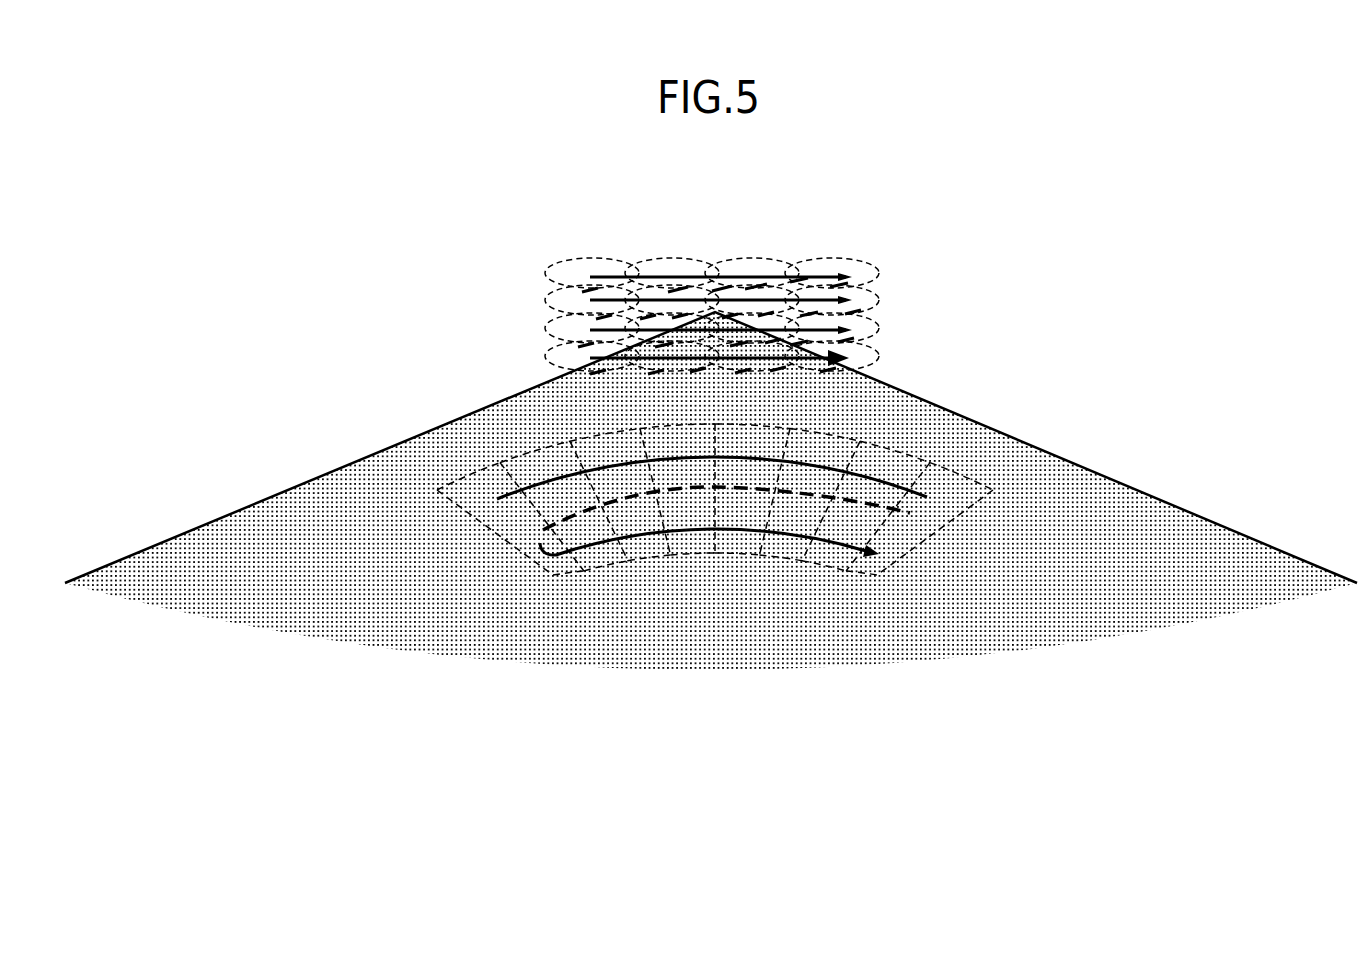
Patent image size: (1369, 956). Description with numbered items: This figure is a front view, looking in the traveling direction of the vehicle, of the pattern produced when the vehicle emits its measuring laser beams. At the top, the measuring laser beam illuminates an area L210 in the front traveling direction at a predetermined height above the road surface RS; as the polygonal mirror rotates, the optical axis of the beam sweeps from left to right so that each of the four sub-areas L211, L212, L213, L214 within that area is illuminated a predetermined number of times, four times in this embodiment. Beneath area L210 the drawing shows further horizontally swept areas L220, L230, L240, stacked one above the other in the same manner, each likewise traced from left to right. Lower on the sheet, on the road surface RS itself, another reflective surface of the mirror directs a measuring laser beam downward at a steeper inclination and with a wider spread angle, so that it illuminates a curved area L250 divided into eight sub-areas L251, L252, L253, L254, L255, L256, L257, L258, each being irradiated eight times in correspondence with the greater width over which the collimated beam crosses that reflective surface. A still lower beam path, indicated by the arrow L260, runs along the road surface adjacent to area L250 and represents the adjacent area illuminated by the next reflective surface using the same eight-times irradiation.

The road surface RS is at (1072, 600).
The area illuminated by measuring laser beam L21 L210 is at (530, 273).
The second scan line L220 is at (530, 300).
The third scan line L230 is at (530, 328).
The fourth scan line L240 is at (530, 356).
The sub-area L211 is at (591, 263).
The sub-area L212 is at (671, 263).
The sub-area L213 is at (751, 263).
The sub-area L214 is at (832, 263).
The area illuminated by measuring laser beam L25 L250 is at (440, 523).
The sub-area L251 is at (448, 489).
The sub-area L252 is at (514, 464).
The sub-area L253 is at (594, 444).
The sub-area L254 is at (677, 427).
The sub-area L255 is at (750, 428).
The sub-area L256 is at (823, 440).
The sub-area L257 is at (897, 457).
The sub-area L258 is at (958, 479).
The curved scan trajectory L260 is at (492, 565).